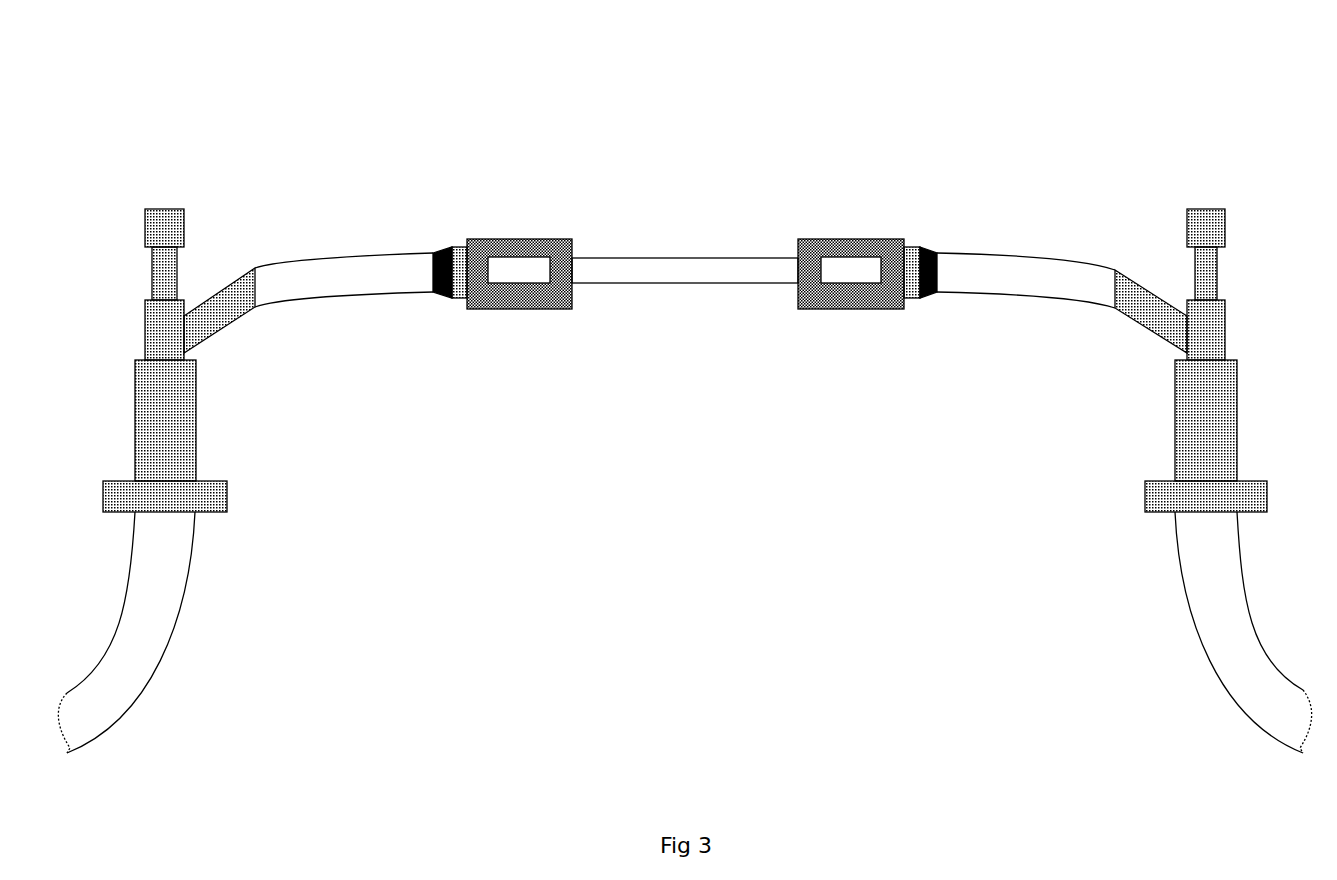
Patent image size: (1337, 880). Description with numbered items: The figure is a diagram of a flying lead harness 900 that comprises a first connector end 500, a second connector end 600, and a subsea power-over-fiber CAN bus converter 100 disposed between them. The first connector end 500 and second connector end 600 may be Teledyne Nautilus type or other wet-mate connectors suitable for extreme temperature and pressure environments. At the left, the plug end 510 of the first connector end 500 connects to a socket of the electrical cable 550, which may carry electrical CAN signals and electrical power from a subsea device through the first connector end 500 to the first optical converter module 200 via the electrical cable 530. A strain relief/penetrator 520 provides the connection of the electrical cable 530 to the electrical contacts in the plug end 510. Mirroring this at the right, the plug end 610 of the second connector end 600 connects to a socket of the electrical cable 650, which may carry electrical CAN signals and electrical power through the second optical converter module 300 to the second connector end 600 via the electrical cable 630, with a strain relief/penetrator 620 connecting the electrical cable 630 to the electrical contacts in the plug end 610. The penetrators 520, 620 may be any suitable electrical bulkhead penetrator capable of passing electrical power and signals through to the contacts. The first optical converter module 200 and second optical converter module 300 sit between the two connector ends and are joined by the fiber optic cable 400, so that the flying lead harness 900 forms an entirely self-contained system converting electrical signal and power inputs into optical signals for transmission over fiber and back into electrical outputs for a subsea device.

The subsea power-over-fiber CAN bus converter 100 is at (455, 118).
The first optical converter module 200 is at (502, 274).
The second optical converter module 300 is at (867, 274).
The fiber optic cable 400 is at (732, 258).
The first connector end 500 is at (162, 178).
The plug end 510 is at (227, 511).
The strain relief/penetrator 520 is at (219, 295).
The electrical cable 530 is at (333, 257).
The electrical cable 550 is at (186, 617).
The second connector end 600 is at (1195, 178).
The plug end 610 is at (1145, 497).
The strain relief/penetrator 620 is at (1152, 290).
The electrical cable 630 is at (1012, 258).
The electrical cable 650 is at (1190, 621).
The flying lead harness 900 is at (655, 527).